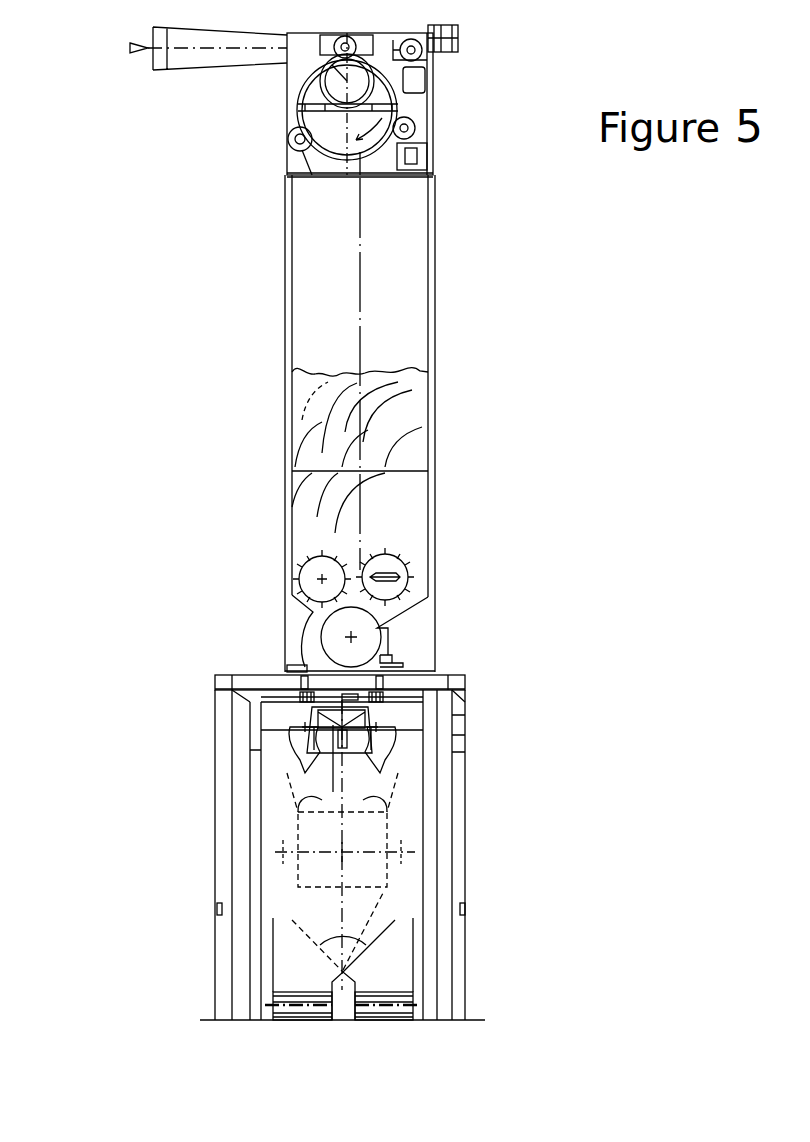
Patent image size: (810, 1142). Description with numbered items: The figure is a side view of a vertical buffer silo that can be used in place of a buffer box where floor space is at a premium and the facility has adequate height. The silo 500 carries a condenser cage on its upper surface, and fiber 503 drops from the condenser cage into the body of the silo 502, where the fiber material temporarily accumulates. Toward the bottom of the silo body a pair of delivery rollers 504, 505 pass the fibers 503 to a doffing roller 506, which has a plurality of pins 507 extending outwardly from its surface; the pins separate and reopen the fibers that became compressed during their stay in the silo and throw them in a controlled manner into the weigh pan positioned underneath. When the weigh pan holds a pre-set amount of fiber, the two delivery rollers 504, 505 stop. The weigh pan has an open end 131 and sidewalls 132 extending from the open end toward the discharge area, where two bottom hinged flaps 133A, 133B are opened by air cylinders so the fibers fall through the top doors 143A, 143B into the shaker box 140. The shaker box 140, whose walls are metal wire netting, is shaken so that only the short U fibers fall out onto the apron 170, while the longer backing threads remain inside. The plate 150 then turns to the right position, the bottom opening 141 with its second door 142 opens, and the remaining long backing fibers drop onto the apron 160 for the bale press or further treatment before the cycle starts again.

The silo 500 is at (285, 350).
The body of the silo 502 is at (425, 262).
The fiber 503 is at (420, 443).
The delivery roller 504 is at (300, 570).
The delivery roller 505 is at (410, 568).
The doffing roller 506 is at (381, 630).
The pins 507 is at (318, 637).
The open end 131 is at (380, 690).
The sidewalls 132 is at (315, 715).
The bottom hinged flap 133A is at (293, 750).
The bottom hinged flap 133B is at (387, 753).
The door 143A is at (297, 807).
The door 143B is at (397, 800).
The shaker box 140 is at (385, 835).
The bottom opening 141 is at (323, 893).
The second door 142 is at (383, 893).
The plate 150 is at (358, 940).
The apron 160 is at (297, 1023).
The apron 170 is at (372, 1023).